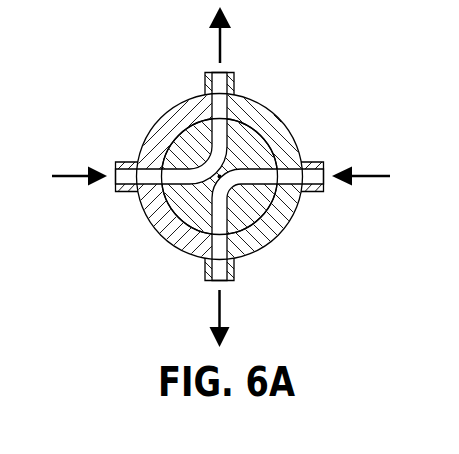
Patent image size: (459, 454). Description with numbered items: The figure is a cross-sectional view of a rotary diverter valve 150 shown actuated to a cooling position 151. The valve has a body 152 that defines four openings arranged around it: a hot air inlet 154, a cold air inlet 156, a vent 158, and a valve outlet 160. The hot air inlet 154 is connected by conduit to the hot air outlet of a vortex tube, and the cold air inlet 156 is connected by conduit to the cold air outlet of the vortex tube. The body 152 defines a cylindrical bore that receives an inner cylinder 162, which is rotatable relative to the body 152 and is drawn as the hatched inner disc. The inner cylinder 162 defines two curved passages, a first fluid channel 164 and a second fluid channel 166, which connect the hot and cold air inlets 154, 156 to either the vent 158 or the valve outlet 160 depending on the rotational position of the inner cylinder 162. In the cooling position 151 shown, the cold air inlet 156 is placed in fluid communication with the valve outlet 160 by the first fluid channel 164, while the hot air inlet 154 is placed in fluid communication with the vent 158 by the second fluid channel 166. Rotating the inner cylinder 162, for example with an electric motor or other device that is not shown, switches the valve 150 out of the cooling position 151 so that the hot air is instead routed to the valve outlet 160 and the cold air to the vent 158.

The rotary diverter valve 150 is at (212, 180).
The cooling position 151 is at (282, 55).
The body 152 is at (220, 180).
The hot air inlet 154 is at (118, 192).
The cold air inlet 156 is at (310, 192).
The vent 158 is at (205, 85).
The valve outlet 160 is at (234, 270).
The inner cylinder 162 is at (192, 202).
The first fluid channel 164 is at (233, 190).
The second fluid channel 166 is at (202, 162).